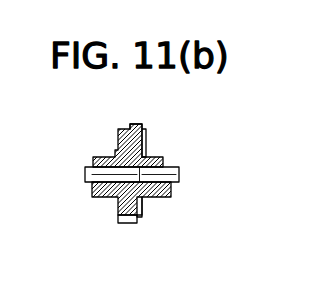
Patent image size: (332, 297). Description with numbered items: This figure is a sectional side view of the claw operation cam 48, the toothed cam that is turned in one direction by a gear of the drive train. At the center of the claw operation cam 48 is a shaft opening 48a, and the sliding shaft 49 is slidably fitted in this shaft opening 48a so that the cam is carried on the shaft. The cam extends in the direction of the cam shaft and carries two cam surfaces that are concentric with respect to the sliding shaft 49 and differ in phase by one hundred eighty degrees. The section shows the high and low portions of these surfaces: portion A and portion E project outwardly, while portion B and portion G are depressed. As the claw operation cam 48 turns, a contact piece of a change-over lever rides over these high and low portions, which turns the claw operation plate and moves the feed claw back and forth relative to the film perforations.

The claw operation cam 48 is at (119, 145).
The shaft opening 48a is at (119, 197).
The sliding shaft 49 is at (86, 171).
The portion A of cam surface A is at (144, 126).
The portion G of cam surface G is at (146, 147).
The portion E of cam surface E is at (143, 205).
The portion B of cam surface B is at (137, 224).